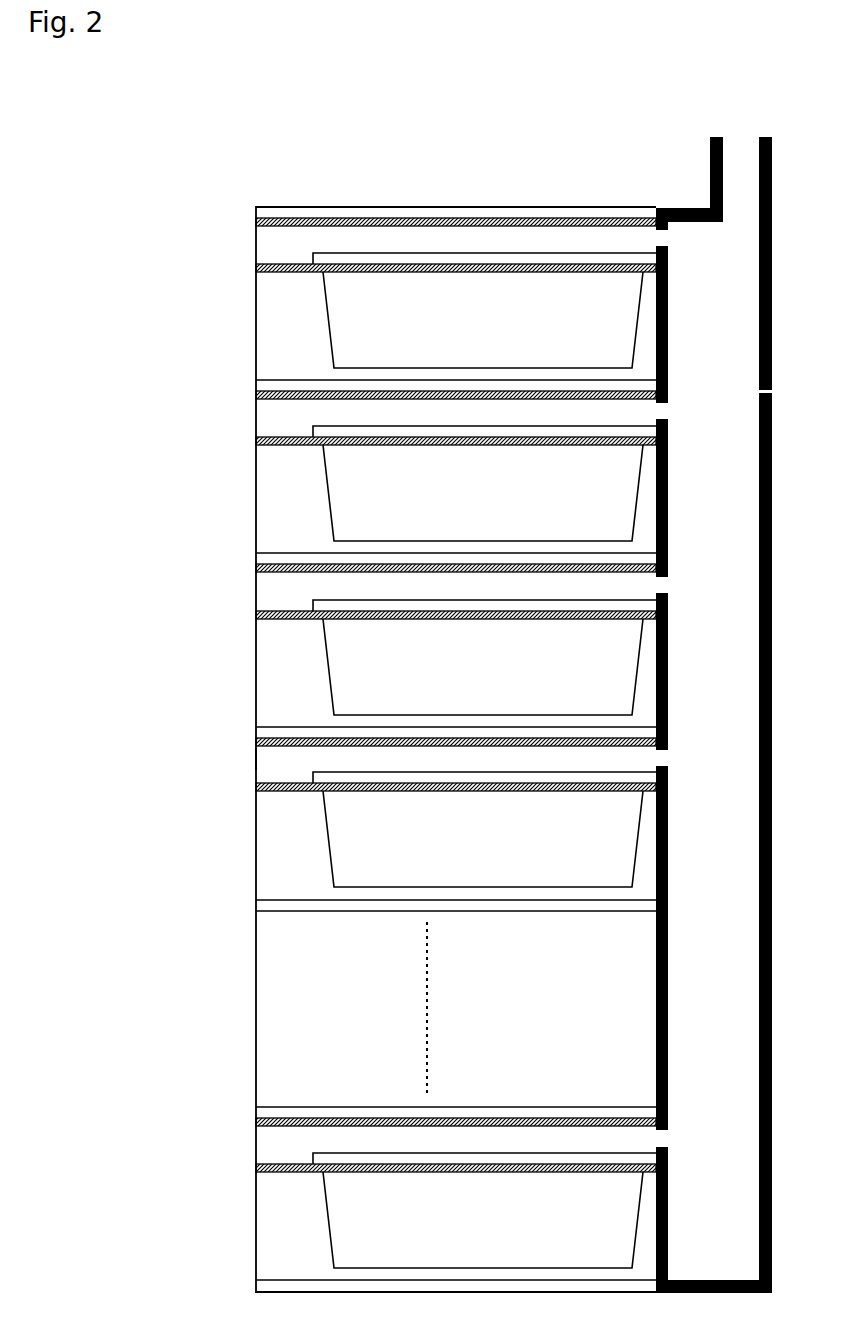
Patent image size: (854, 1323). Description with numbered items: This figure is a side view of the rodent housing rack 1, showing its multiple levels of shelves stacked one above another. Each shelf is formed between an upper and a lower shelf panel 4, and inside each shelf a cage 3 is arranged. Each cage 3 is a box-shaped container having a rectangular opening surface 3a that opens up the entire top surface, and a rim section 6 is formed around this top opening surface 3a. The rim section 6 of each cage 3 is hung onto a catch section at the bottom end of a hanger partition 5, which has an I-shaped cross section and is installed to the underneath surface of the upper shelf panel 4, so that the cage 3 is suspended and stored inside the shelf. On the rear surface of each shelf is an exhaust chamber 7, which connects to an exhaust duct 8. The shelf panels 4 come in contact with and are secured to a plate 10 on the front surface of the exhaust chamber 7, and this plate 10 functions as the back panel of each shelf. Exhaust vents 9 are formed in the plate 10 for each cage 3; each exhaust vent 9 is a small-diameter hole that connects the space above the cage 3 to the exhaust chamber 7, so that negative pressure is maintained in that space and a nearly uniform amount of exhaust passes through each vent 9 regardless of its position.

The rodent housing rack 1 is at (245, 231).
The cage 3 is at (336, 320).
The opening surface 3a is at (480, 253).
The shelf panel 4 is at (260, 731).
The hanger partition 5 is at (265, 767).
The rim section 6 is at (599, 258).
The exhaust chamber 7 is at (724, 757).
The exhaust duct 8 is at (739, 163).
The exhaust vent 9 is at (667, 587).
The plate 10 is at (668, 507).